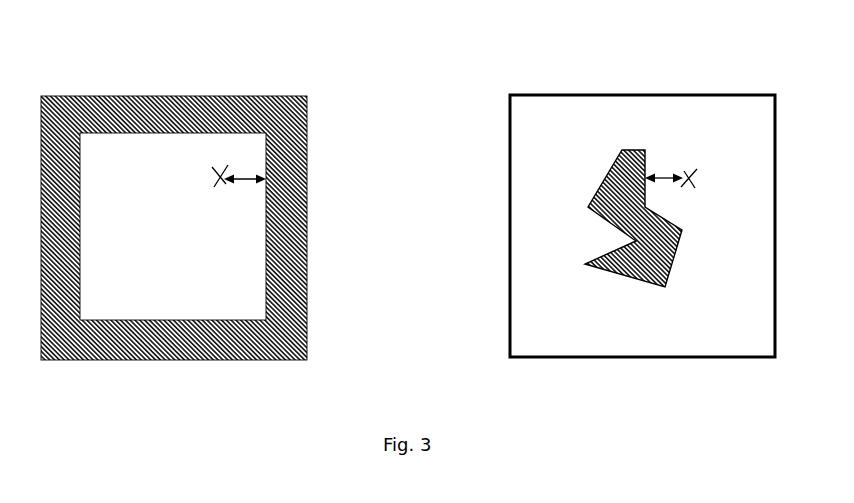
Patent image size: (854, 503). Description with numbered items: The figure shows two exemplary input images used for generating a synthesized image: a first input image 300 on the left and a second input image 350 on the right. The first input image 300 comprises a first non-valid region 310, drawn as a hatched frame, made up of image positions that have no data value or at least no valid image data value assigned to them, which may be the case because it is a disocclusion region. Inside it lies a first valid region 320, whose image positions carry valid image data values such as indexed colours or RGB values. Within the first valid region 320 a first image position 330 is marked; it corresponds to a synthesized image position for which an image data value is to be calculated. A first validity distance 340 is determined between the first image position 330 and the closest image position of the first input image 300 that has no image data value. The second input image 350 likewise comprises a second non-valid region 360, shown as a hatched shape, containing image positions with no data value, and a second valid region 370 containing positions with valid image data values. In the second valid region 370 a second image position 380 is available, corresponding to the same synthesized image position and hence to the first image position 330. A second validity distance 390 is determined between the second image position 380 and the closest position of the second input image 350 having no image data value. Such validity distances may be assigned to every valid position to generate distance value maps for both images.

The first input image 300 is at (308, 170).
The first non-valid region 310 is at (272, 110).
The first valid region 320 is at (112, 158).
The first image position 330 is at (217, 178).
The first validity distance 340 is at (226, 184).
The second input image 350 is at (510, 268).
The second non-valid region 360 is at (588, 266).
The second valid region 370 is at (528, 180).
The second image position 380 is at (690, 184).
The second validity distance 390 is at (677, 171).